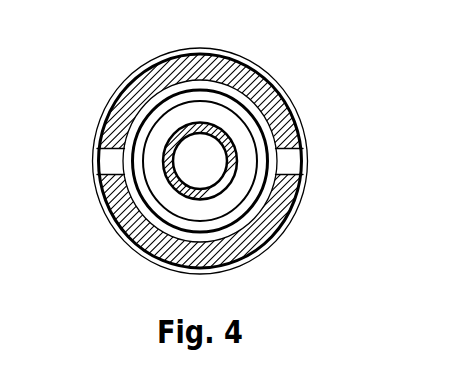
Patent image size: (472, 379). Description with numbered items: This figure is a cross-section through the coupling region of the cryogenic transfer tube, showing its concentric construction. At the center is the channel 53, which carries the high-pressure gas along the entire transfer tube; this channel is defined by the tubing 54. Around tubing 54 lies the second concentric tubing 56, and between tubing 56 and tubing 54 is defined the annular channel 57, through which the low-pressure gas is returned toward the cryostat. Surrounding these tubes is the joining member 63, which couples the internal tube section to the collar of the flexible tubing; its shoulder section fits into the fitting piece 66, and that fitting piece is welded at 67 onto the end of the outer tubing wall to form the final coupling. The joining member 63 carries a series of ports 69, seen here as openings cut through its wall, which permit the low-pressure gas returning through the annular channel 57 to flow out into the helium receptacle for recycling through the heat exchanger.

The channel 53 is at (201, 157).
The tubing 54 is at (192, 127).
The second concentric tubing 56 is at (257, 190).
The annular channel 57 is at (231, 127).
The joining member 63 is at (110, 127).
The fitting piece 66 is at (253, 214).
The weld 67 is at (132, 80).
The ports 69 is at (108, 164).